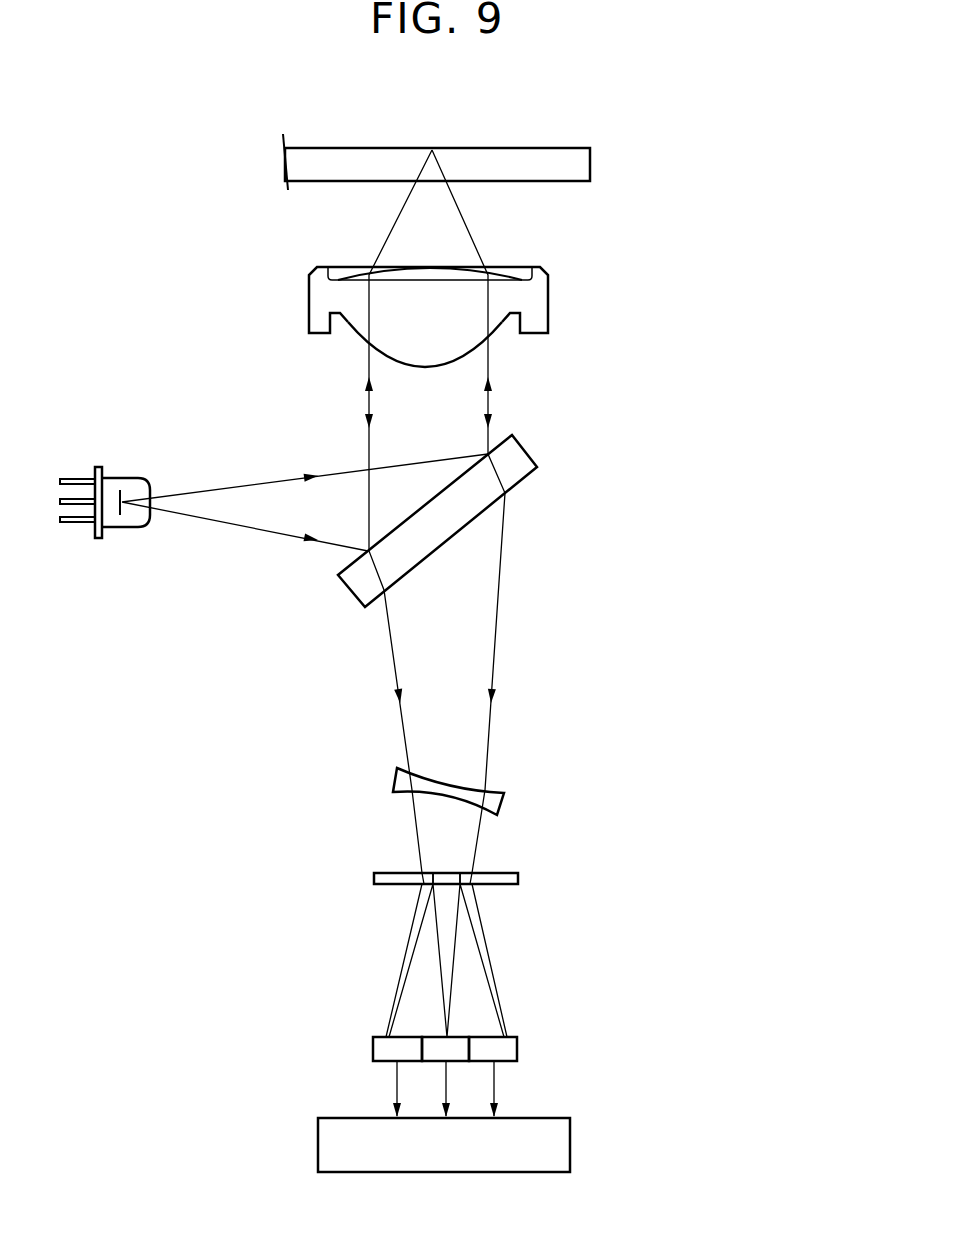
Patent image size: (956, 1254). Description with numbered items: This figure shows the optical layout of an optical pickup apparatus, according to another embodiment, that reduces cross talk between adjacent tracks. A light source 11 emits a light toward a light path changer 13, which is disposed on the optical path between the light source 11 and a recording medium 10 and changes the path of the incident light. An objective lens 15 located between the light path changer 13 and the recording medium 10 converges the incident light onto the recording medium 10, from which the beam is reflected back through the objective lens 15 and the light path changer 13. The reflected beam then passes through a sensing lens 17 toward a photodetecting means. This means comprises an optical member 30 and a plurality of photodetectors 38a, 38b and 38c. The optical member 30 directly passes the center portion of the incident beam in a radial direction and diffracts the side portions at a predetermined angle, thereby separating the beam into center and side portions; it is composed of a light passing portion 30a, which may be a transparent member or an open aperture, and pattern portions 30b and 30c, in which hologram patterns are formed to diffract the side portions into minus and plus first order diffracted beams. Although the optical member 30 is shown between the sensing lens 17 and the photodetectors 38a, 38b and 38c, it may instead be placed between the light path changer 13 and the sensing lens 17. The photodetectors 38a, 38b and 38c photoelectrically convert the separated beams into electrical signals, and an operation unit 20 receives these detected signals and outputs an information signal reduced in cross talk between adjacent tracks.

The recording medium 10 is at (590, 164).
The objective lens 15 is at (548, 297).
The light source 11 is at (120, 476).
The light path changer 13 is at (520, 449).
The sensing lens 17 is at (503, 797).
The optical member 30 is at (540, 880).
The light passing portion 30a is at (453, 872).
The pattern portion 30b is at (385, 885).
The pattern portion 30c is at (500, 885).
The photodetector 38a is at (460, 1063).
The photodetector 38b is at (373, 1047).
The photodetector 38c is at (518, 1048).
The operation unit 20 is at (571, 1147).